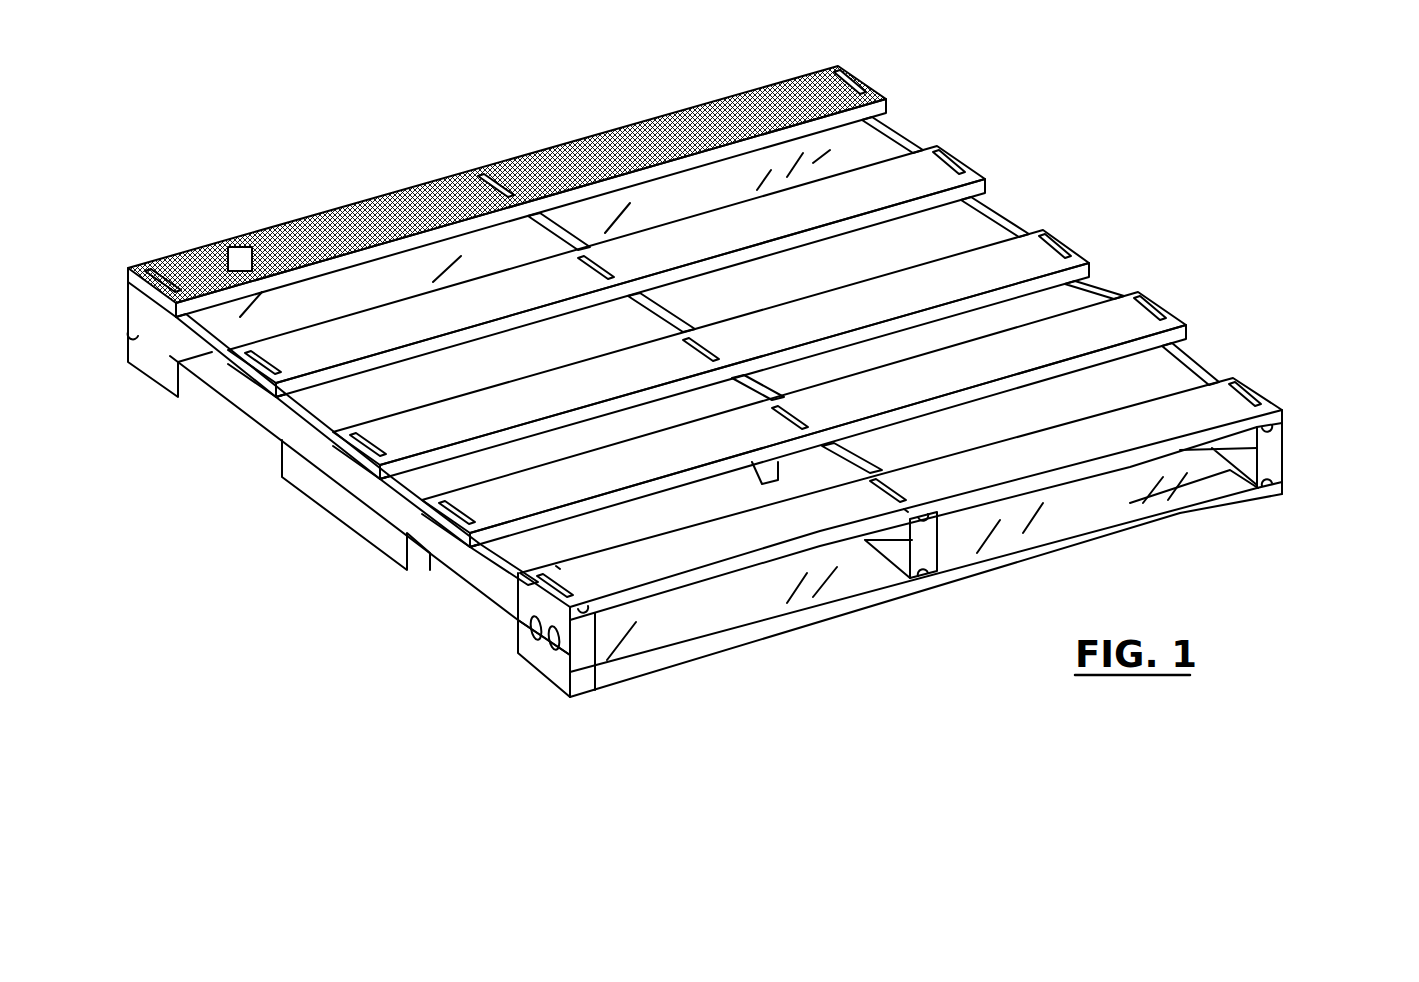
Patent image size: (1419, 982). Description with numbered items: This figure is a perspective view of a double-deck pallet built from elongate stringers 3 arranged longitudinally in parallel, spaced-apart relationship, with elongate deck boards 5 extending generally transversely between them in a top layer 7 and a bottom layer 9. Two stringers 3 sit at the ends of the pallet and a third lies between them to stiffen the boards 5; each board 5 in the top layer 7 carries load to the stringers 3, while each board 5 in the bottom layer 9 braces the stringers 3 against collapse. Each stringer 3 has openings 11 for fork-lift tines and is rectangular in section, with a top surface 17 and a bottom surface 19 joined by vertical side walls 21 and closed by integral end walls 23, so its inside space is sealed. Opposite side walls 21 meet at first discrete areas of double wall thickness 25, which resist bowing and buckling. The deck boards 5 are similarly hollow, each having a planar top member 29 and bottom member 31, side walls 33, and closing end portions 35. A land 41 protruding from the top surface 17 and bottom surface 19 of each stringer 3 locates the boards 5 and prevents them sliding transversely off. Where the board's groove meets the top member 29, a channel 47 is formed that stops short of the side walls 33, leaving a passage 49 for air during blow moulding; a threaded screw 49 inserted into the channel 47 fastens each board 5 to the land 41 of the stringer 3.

The stringer 3 is at (393, 585).
The deck board 5 is at (690, 702).
The top layer 7 is at (1310, 421).
The bottom layer 9 is at (1333, 484).
The opening 11 is at (220, 398).
The top surface 17 is at (292, 408).
The bottom surface 19 is at (130, 337).
The side wall 21 is at (390, 518).
The end wall 23 is at (582, 655).
The first discrete area of double wall thickness 25 is at (553, 650).
The top member 29 is at (811, 531).
The bottom member 31 is at (752, 613).
The side wall 33 is at (1058, 478).
The end portion 35 is at (128, 273).
The land 41 is at (423, 482).
The channel 47 is at (562, 580).
The screw 49 is at (558, 566).